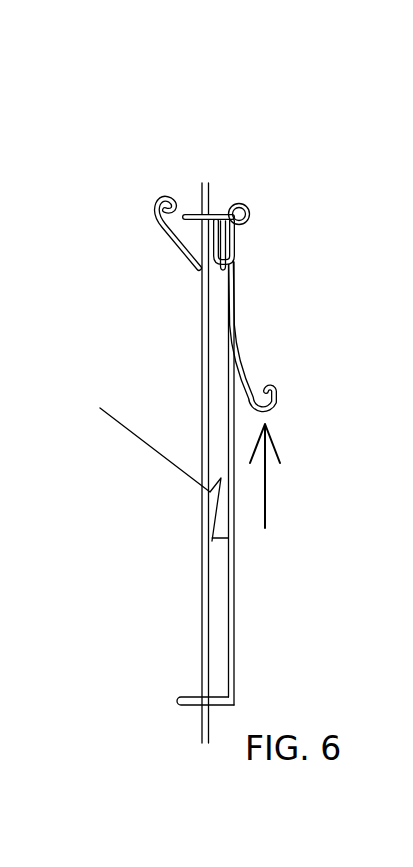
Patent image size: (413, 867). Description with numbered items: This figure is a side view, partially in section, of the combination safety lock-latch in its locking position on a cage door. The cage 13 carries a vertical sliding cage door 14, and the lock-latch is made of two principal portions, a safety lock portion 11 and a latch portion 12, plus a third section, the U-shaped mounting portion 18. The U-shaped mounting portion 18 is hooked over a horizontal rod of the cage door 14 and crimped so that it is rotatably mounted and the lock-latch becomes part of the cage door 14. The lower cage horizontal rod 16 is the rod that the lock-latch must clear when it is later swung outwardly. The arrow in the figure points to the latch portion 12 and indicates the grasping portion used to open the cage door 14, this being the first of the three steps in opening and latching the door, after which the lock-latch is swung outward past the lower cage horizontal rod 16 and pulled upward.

The safety lock portion 11 is at (237, 277).
The latch portion 12 is at (278, 407).
The cage 13 is at (202, 337).
The vertical sliding cage door 14 is at (228, 524).
The lower cage horizontal rod 16 is at (245, 224).
The U-shaped mounting portion 18 is at (248, 209).